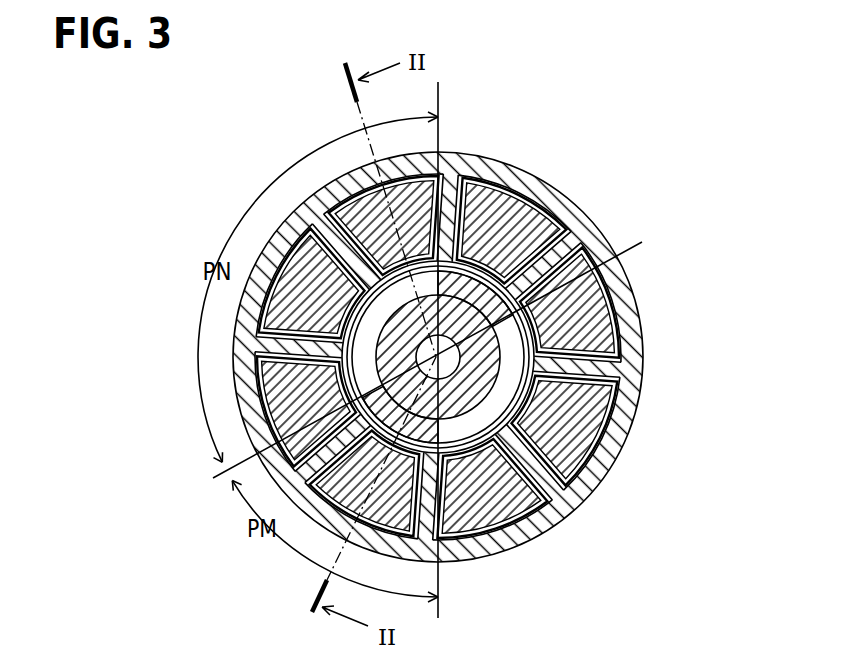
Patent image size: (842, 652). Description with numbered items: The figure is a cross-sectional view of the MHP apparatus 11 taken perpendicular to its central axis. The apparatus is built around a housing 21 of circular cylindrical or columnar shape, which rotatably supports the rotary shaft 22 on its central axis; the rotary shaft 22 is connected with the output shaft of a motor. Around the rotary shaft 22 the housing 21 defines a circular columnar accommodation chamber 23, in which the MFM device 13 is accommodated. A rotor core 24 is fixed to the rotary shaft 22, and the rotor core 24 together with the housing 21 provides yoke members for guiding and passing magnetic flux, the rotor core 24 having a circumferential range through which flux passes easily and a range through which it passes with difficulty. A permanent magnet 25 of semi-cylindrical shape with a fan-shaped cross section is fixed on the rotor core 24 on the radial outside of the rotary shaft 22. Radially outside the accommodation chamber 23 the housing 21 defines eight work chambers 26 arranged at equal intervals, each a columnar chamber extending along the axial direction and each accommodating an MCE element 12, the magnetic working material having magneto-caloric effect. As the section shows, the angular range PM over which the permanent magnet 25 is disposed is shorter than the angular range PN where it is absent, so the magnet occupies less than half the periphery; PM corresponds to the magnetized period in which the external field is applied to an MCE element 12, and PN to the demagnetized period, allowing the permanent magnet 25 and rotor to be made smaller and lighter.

The MHP apparatus 11 is at (486, 124).
The MCE element 12 is at (493, 222).
The MFM device 13 is at (502, 373).
The housing 21 is at (600, 460).
The rotary shaft 22 is at (447, 367).
The accommodation chamber 23 is at (513, 366).
The rotor core 24 is at (492, 345).
The permanent magnet 25 is at (483, 275).
The work chamber 26 is at (553, 212).